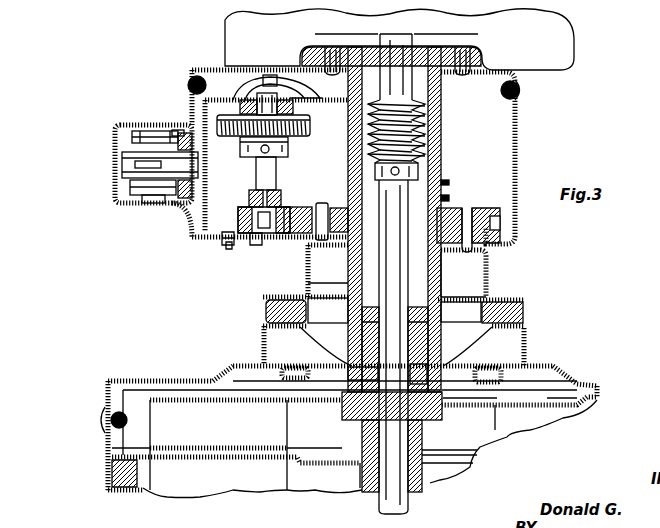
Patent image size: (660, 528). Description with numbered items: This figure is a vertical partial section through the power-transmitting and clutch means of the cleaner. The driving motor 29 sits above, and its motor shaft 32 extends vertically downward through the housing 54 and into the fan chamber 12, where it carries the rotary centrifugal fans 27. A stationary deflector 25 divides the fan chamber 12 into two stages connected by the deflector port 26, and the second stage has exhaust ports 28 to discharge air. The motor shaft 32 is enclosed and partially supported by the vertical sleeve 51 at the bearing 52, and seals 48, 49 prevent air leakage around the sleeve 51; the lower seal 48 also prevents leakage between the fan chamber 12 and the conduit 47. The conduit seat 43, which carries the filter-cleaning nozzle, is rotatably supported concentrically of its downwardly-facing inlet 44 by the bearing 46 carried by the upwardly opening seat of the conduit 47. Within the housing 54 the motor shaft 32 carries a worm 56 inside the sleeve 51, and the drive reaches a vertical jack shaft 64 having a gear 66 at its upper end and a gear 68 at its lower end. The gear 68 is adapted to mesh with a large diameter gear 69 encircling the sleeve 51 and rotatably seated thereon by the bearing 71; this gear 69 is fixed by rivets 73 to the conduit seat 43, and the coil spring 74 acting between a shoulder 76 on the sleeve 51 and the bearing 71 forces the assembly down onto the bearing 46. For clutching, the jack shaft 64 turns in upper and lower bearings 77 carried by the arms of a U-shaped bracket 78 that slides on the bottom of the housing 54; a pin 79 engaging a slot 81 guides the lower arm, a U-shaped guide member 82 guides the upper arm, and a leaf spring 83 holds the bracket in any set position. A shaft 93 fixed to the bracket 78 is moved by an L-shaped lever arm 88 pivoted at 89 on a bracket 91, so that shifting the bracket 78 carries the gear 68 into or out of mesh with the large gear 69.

The fan chamber 12 is at (125, 447).
The stationary deflector 25 is at (215, 484).
The deflector port 26 is at (324, 481).
The rotary centrifugal fan 27 is at (246, 445).
The exhaust ports 28 is at (142, 389).
The driving motor 29 is at (573, 68).
The motor shaft 32 is at (393, 347).
The conduit seat 43 is at (490, 277).
The downwardly-facing inlet 44 is at (305, 278).
The bearing 46 is at (262, 318).
The conduit 47 is at (312, 345).
The seal 48 is at (330, 376).
The seal 49 is at (448, 262).
The vertical sleeve 51 is at (350, 287).
The bearing 52 is at (425, 348).
The housing 54 is at (510, 126).
The worm 56 is at (396, 107).
The vertical jack shaft 64 is at (255, 176).
The gear 66 is at (307, 137).
The gear 68 is at (287, 212).
The large diameter gear 69 is at (301, 213).
The bearing 71 is at (440, 238).
The rivets 73 is at (472, 209).
The coil spring 74 is at (443, 197).
The shoulder 76 is at (443, 180).
The bearings 77 is at (295, 108).
The U-shaped bracket 78 is at (208, 135).
The pin 79 is at (225, 243).
The slot 81 is at (195, 240).
The U-shaped guide member 82 is at (222, 67).
The leaf spring 83 is at (312, 82).
The L-shaped lever arm 88 is at (145, 144).
The pivot 89 is at (152, 205).
The bracket 91 is at (180, 127).
The shaft 93 is at (130, 163).